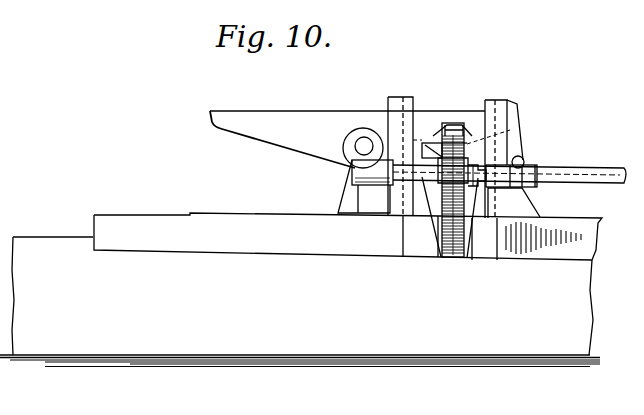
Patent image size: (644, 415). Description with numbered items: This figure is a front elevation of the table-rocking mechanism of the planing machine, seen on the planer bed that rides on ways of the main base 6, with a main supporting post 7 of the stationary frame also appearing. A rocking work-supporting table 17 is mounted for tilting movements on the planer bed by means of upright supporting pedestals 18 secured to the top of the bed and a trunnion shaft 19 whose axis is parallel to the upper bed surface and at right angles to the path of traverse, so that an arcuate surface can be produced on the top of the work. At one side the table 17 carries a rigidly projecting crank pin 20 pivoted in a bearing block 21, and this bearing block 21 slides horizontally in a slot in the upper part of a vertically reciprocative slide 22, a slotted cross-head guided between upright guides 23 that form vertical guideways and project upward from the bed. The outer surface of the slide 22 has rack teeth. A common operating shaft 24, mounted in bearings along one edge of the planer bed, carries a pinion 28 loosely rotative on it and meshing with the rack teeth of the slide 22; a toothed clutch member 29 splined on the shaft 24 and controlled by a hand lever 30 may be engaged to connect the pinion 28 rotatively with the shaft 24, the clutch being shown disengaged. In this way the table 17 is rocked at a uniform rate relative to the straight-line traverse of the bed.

The main base 6 is at (300, 302).
The main supporting posts 7 is at (348, 236).
The rocking work-supporting table 17 is at (347, 139).
The upright supporting pedestals 18 is at (340, 187).
The trunnion shaft 19 is at (364, 145).
The crank pin 20 is at (467, 112).
The bearing block 21 is at (428, 145).
The vertically reciprocative slide 22 is at (421, 130).
The upright guides 23 is at (393, 97).
The operating shaft 24 is at (583, 172).
The pinion 28 is at (472, 222).
The toothed clutch member 29 is at (478, 186).
The hand lever 30 is at (522, 158).